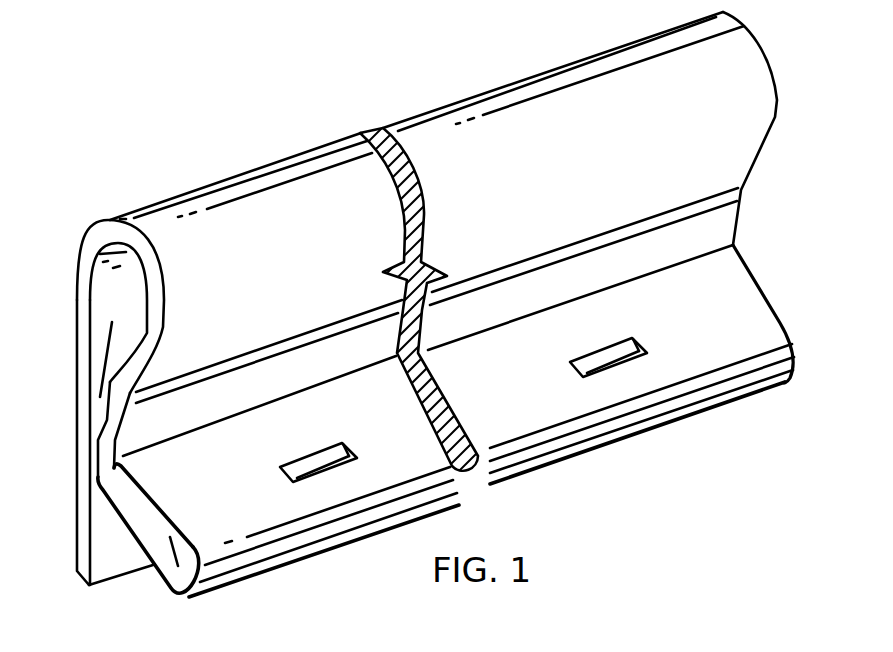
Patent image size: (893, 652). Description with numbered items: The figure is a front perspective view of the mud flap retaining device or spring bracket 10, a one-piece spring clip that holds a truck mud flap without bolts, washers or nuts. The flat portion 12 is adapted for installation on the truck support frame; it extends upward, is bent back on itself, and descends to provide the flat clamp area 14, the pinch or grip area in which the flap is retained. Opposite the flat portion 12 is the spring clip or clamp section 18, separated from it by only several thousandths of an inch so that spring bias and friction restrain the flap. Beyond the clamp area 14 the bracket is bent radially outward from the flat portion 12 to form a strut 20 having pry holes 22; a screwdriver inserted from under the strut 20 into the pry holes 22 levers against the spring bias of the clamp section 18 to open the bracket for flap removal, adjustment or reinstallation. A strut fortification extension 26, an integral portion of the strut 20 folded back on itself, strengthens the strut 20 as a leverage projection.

The mud flap retaining device 10 is at (318, 119).
The flat portion 12 is at (74, 525).
The flat clamp area 14 is at (112, 322).
The spring clip section 18 is at (148, 425).
The strut 20 is at (745, 302).
The pry holes 22 is at (347, 446).
The strut fortification extension 26 is at (169, 540).